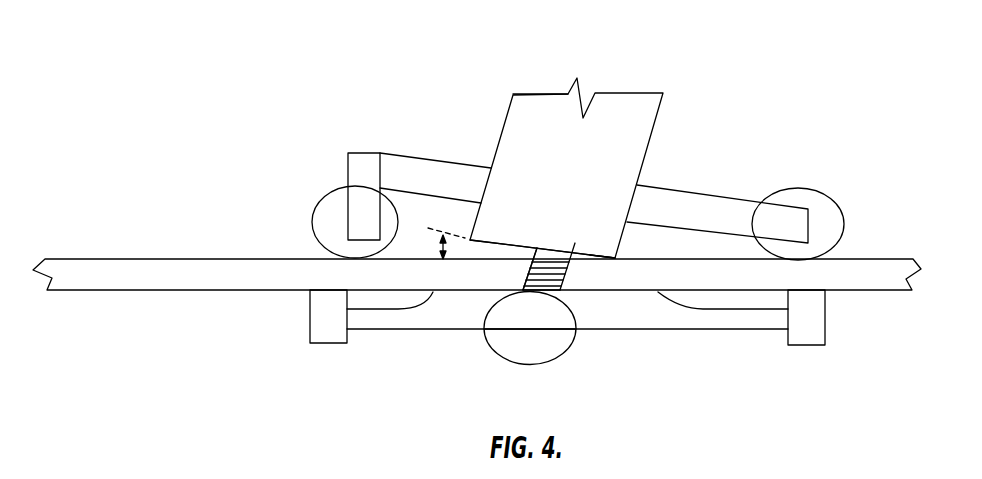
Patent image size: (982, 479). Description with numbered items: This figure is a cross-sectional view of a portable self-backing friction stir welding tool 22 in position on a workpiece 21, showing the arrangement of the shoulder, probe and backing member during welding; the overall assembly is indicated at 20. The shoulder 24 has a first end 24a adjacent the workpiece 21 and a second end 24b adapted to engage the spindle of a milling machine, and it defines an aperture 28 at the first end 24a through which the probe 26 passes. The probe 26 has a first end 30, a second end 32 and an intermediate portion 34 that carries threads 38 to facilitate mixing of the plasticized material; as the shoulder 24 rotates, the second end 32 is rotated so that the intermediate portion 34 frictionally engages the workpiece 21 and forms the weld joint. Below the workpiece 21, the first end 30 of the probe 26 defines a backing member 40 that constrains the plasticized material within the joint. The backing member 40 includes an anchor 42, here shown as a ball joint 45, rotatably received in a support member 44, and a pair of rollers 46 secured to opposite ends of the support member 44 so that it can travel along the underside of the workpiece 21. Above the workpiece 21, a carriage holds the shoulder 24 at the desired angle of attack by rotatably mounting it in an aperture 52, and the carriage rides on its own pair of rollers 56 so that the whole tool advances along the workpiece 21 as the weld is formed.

The cutting tool assembly 20 is at (467, 128).
The workpiece 21 is at (83, 265).
The self-backing friction stir welding tool 22 is at (560, 266).
The shoulder 24 is at (633, 135).
The first end of the shoulder 24a is at (478, 238).
The second end of the shoulder 24b is at (645, 92).
The probe 26 is at (617, 258).
The aperture 28 is at (538, 248).
The first end of the probe 30 is at (533, 293).
The second end of the probe 32 is at (540, 235).
The intermediate portion of the probe 34 is at (525, 280).
The threads 38 is at (568, 267).
The backing member 40 is at (564, 348).
The anchor 42 is at (520, 355).
The support member 44 is at (705, 320).
The ball joint 45 is at (547, 352).
The rollers 46 is at (332, 333).
The aperture of the carriage 52 is at (637, 185).
The rollers of the carriage 56 is at (327, 207).